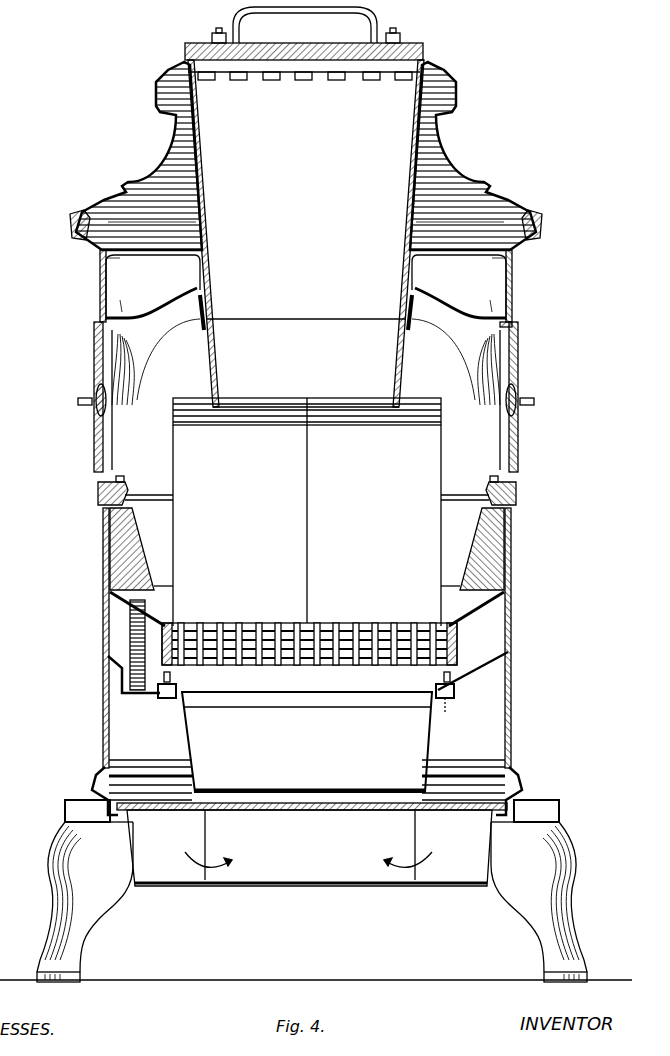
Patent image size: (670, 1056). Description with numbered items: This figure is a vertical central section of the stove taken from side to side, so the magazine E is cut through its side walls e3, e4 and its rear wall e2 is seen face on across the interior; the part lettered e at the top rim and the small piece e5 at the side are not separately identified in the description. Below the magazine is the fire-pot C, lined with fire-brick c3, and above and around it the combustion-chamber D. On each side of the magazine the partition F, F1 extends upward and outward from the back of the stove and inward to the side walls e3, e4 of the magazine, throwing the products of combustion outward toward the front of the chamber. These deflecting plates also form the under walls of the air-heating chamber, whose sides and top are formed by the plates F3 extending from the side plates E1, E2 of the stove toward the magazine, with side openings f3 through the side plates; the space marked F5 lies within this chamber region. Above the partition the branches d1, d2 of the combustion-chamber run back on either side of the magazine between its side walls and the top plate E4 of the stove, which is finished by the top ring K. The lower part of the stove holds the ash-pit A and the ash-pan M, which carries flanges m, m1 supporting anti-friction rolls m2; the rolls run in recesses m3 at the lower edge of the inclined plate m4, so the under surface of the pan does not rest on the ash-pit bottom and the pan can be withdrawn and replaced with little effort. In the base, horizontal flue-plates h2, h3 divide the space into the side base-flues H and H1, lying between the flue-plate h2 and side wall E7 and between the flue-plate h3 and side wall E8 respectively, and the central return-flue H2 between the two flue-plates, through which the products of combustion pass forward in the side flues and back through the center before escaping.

The magazine E is at (306, 233).
The rim of casing cap e is at (440, 68).
The rear wall of the magazine e2 is at (302, 355).
The side wall of the magazine e3 is at (408, 300).
The side wall of the magazine e4 is at (216, 294).
The casing lug e5 is at (515, 328).
The side plate of the stove E1 is at (96, 320).
The side plate of the stove E2 is at (516, 320).
The top plate of the stove E4 is at (306, 191).
The side wall of the base E7 is at (490, 848).
The side wall of the base E8 is at (128, 856).
The top ring K is at (300, 223).
The branch of the combustion-chamber d1 is at (460, 214).
The branch of the combustion-chamber d2 is at (152, 213).
The side openings f3 is at (100, 298).
The plates of the air-heating chamber F3 is at (306, 266).
The flue chamber F5 is at (306, 287).
The partition F1 is at (153, 346).
The partition F is at (478, 350).
The combustion-chamber D is at (306, 418).
The fire-pot C is at (307, 512).
The fire-brick c3 is at (307, 515).
The ash-pit A is at (307, 645).
The flange of the ash-pan m is at (180, 690).
The flange of the ash-pan m1 is at (448, 714).
The anti-friction rolls m2 is at (170, 682).
The recesses m3 is at (167, 700).
The inclined plate m4 is at (132, 696).
The ash-pan M is at (307, 742).
The base-flue H is at (431, 845).
The base-flue H1 is at (183, 845).
The central return-flue H2 is at (312, 844).
The flue-plate h2 is at (408, 854).
The flue-plate h3 is at (208, 855).